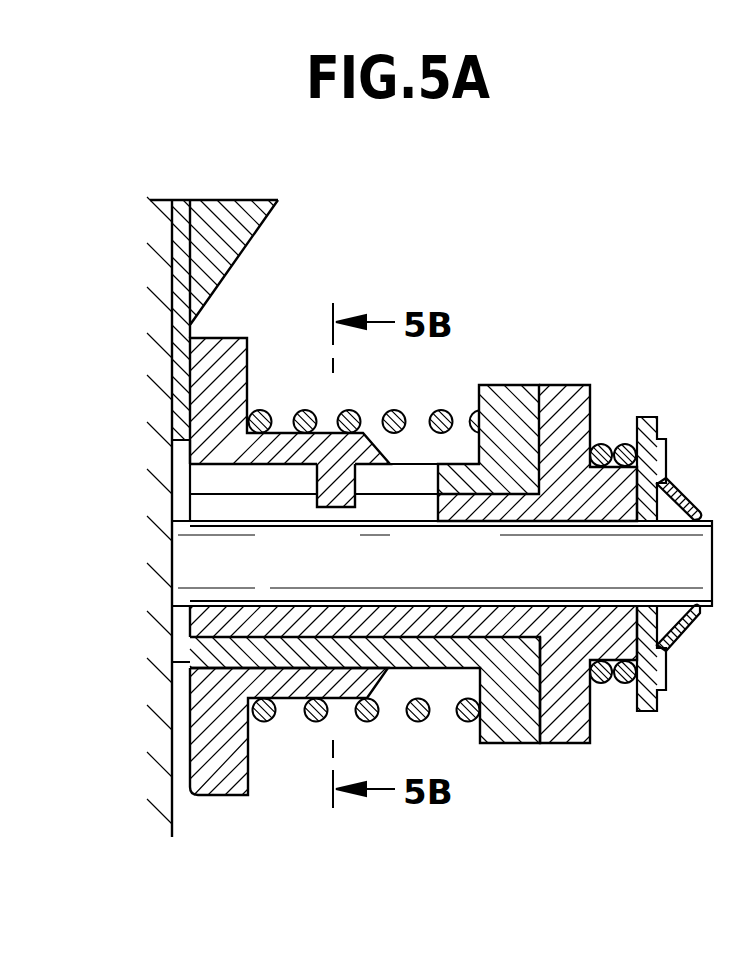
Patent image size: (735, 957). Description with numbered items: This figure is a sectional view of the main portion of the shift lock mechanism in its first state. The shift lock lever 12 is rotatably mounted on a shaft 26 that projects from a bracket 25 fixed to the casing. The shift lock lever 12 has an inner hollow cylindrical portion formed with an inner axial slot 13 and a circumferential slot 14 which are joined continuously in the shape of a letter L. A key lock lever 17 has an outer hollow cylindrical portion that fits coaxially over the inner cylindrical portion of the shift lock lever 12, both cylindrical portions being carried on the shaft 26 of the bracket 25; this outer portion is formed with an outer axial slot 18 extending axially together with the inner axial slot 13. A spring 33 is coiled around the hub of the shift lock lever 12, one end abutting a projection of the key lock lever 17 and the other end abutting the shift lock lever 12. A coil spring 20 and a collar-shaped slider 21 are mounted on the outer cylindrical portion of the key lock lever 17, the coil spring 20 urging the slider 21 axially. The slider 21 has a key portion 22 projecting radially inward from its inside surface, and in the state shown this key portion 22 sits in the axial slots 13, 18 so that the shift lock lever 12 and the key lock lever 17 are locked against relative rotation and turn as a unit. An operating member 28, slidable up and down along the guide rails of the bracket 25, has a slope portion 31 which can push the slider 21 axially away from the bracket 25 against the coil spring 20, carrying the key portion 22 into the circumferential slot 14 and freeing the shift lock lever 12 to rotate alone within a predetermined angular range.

The shift lock lever 12 is at (562, 384).
The inner axial slot 13 is at (203, 507).
The circumferential slot 14 is at (427, 508).
The key lock lever 17 is at (522, 744).
The outer axial slot 18 is at (203, 478).
The coil spring 20 is at (440, 406).
The slider 21 is at (248, 350).
The key portion 22 is at (317, 497).
The bracket 25 is at (175, 822).
The shaft 26 is at (192, 570).
The operating member 28 is at (182, 386).
The slope portion 31 is at (254, 240).
The spring 33 is at (623, 435).